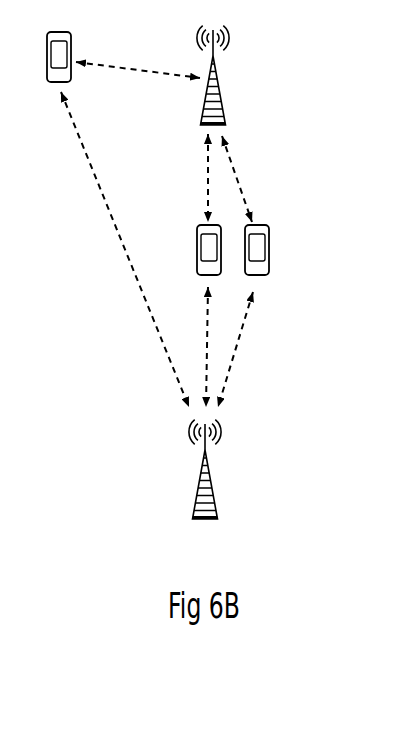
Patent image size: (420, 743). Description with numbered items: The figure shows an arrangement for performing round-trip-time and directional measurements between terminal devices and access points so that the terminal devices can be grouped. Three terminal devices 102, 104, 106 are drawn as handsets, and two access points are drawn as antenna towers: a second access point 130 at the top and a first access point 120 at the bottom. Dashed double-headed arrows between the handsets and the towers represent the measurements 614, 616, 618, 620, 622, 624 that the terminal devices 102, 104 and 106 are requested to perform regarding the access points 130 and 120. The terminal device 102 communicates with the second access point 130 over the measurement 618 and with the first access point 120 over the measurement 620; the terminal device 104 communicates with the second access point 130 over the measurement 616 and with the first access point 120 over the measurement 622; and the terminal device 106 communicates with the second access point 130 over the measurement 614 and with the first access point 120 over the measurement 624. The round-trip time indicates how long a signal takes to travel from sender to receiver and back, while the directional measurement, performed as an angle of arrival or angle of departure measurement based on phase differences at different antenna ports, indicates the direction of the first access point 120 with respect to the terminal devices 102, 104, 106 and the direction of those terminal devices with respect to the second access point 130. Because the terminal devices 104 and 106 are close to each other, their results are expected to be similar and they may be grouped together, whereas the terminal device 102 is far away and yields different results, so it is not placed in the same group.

The terminal device 102 is at (73, 40).
The terminal device 104 is at (196, 248).
The terminal device 106 is at (269, 251).
The first access point 120 is at (193, 491).
The second access point 130 is at (200, 99).
The RTT or directional measurement 614 is at (246, 179).
The RTT or directional measurement 616 is at (186, 178).
The RTT or directional measurement 618 is at (138, 59).
The RTT or directional measurement 620 is at (125, 249).
The RTT or directional measurement 622 is at (188, 347).
The RTT or directional measurement 624 is at (244, 349).